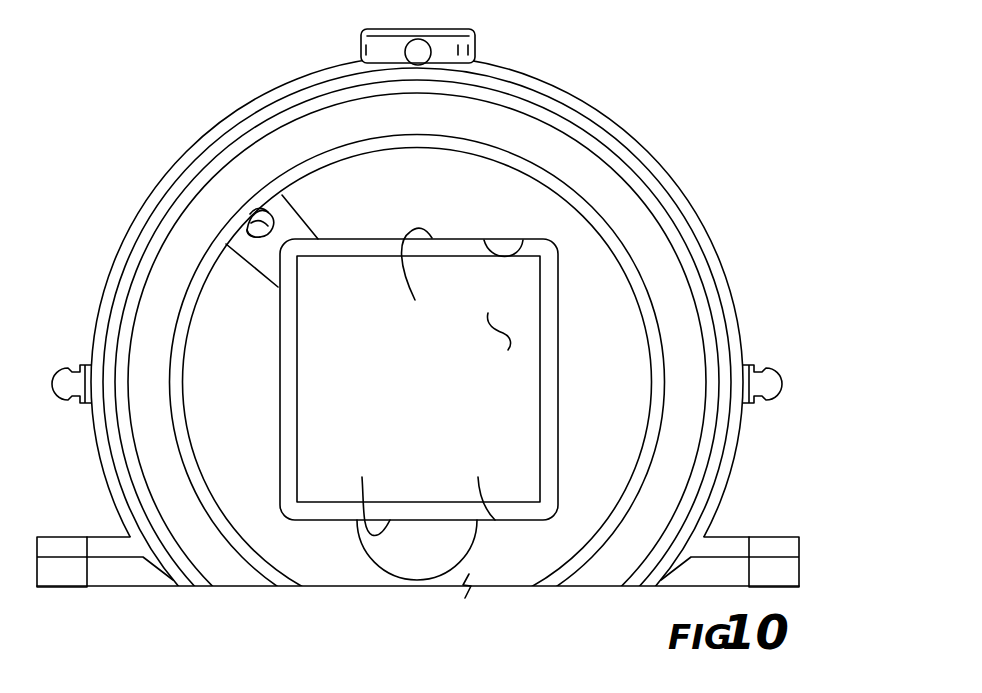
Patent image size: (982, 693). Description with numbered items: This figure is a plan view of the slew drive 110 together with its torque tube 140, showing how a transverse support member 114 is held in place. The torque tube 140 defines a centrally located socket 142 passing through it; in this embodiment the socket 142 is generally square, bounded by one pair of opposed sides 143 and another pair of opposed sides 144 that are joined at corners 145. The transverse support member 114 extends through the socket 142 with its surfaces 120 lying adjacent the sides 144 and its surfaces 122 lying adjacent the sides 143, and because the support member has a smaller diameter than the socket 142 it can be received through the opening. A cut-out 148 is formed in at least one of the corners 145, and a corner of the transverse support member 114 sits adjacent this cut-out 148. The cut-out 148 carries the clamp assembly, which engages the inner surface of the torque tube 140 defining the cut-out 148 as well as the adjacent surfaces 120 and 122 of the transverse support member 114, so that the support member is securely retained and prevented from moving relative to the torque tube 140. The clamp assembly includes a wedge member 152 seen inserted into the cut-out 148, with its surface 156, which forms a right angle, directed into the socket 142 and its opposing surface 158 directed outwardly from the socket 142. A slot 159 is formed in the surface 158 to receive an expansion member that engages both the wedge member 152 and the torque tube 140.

The slew drive 110 is at (760, 341).
The transverse support member 114 is at (425, 512).
The surfaces 120 is at (392, 381).
The surfaces 122 is at (280, 342).
The torque tube 140 is at (611, 462).
The socket 142 is at (559, 240).
The opposed sides 143 is at (279, 394).
The opposed sides 144 is at (523, 240).
The corners 145 is at (503, 333).
The cut-out 148 is at (255, 221).
The wedge member 152 is at (283, 212).
The surface 156 is at (268, 270).
The opposing surface 158 is at (248, 229).
The slot 159 is at (259, 208).